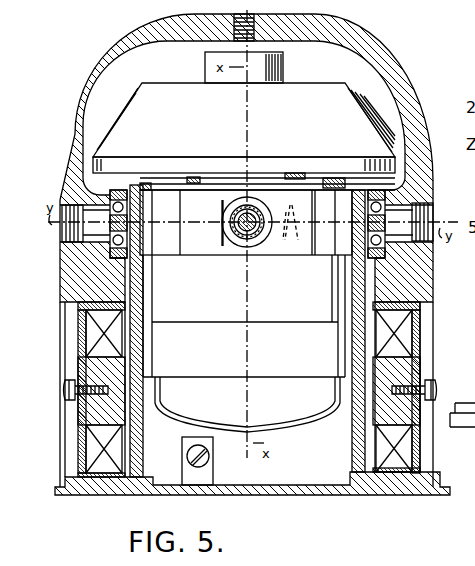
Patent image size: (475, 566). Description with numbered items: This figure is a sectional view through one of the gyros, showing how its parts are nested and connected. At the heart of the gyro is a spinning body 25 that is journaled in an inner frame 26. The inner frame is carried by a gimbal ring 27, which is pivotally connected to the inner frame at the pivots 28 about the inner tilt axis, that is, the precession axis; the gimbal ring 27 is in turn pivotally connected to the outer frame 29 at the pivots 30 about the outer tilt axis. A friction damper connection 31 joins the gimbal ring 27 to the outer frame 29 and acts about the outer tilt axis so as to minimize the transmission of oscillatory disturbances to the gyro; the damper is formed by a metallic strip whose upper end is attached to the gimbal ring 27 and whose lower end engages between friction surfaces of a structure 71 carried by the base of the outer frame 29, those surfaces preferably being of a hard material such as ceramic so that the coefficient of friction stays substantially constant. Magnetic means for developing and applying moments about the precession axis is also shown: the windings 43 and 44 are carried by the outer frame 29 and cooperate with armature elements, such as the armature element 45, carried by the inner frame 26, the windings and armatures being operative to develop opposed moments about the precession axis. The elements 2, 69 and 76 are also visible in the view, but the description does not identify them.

The shaft 2 is at (251, 232).
The spinning body 25 is at (315, 96).
The inner frame 26 is at (333, 247).
The gimbal ring 27 is at (118, 190).
The pivotal connection 28 is at (253, 205).
The outer frame 29 is at (428, 283).
The pivotal connection 30 is at (120, 212).
The friction damper connection 31 is at (192, 434).
The winding 43 is at (113, 453).
The winding 44 is at (407, 443).
The armature element 45 is at (143, 365).
The sleeve 69 is at (222, 237).
The structure 71 is at (213, 459).
The bracket 76 is at (474, 393).